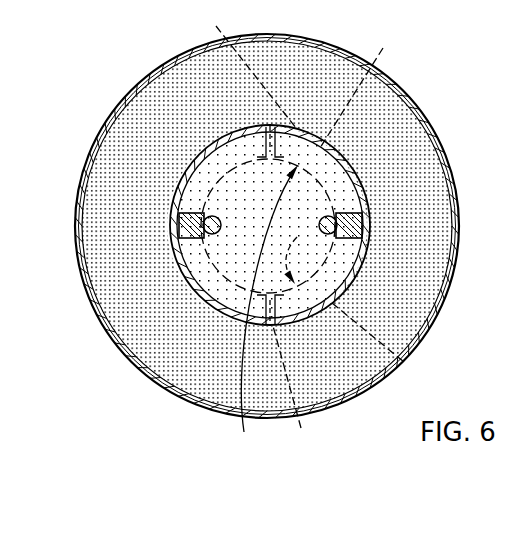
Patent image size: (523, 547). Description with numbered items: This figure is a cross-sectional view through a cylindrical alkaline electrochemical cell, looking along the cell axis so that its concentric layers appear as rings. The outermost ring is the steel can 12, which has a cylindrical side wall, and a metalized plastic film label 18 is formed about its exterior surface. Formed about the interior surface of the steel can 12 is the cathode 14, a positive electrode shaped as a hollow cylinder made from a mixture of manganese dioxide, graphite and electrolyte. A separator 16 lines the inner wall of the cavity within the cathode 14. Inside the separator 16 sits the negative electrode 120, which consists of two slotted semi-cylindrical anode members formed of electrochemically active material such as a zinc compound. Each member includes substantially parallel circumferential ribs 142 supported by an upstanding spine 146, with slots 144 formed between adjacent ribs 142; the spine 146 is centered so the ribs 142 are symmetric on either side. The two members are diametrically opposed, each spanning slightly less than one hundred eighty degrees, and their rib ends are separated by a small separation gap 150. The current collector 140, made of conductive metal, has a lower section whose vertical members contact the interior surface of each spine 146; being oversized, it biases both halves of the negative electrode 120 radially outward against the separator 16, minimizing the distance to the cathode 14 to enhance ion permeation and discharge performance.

The steel can 12 is at (193, 397).
The cathode 14 is at (168, 354).
The separator 16 is at (176, 250).
The plastic film label 18 is at (123, 345).
The negative electrode 120 is at (265, 309).
The current collector 140 is at (212, 216).
The circumferential ribs 142 is at (408, 360).
The slots 144 is at (369, 89).
The spine 146 is at (179, 213).
The separation gap 150 is at (294, 228).